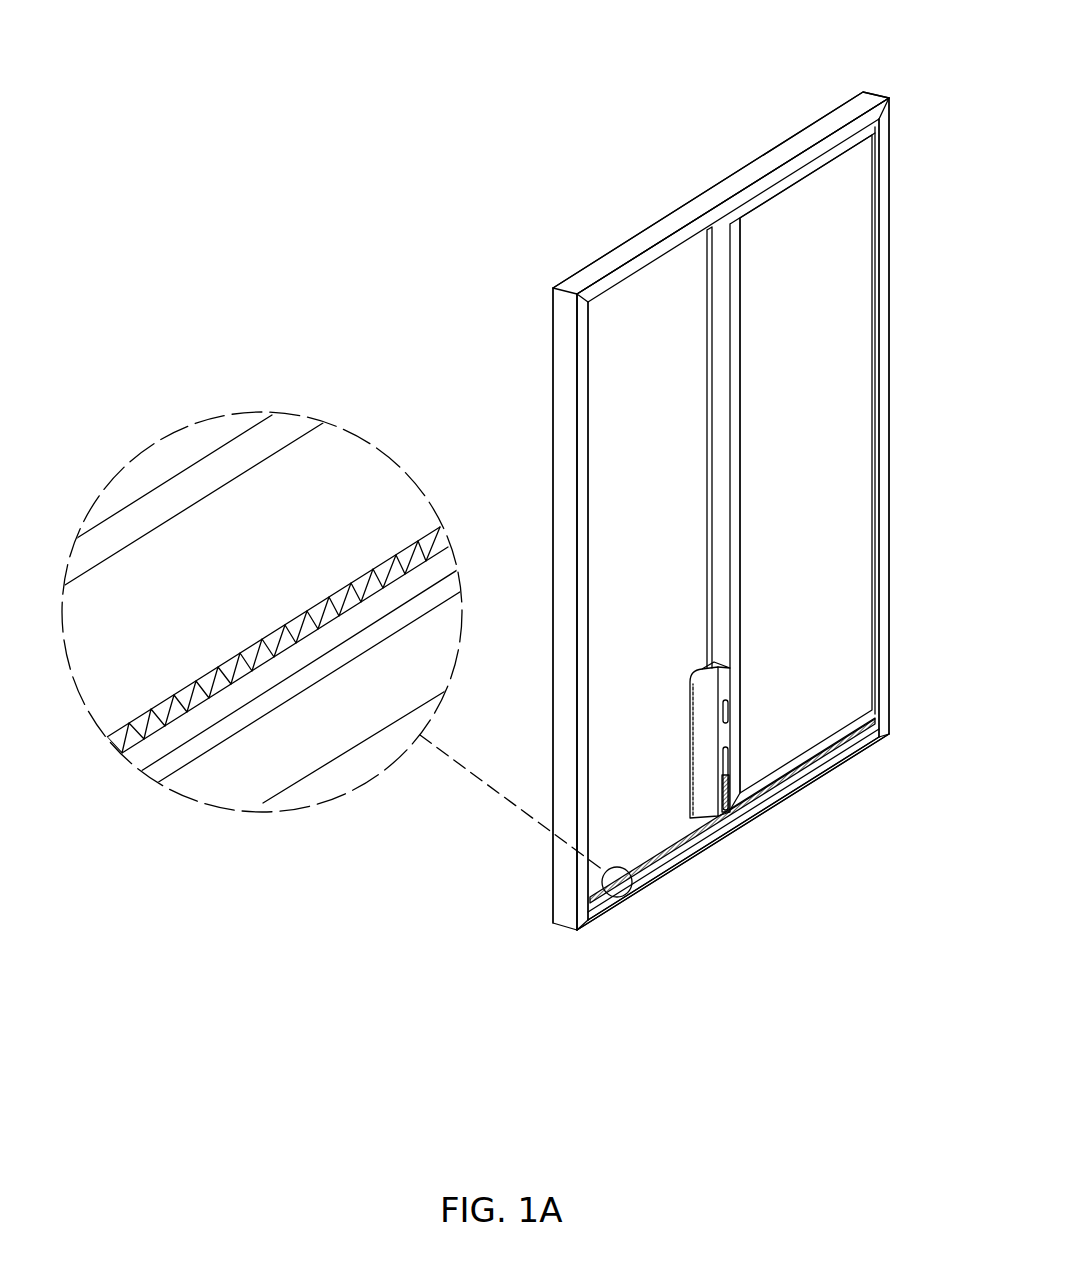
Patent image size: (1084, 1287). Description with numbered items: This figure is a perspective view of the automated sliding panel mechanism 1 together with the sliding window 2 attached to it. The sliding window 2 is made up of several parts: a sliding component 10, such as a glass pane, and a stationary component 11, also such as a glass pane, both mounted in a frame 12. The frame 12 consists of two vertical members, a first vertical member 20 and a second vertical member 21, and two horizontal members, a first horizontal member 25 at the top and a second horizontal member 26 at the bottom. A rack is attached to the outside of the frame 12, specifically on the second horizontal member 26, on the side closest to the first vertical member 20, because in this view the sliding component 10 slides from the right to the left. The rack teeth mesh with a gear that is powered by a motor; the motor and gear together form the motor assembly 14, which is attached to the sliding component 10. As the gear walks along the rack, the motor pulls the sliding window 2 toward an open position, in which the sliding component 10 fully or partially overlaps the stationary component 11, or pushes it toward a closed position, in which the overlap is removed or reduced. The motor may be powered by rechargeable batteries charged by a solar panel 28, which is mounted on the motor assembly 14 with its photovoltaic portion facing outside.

The automated sliding panel mechanism 1 is at (672, 913).
The sliding window 2 is at (813, 495).
The sliding component 10 is at (808, 685).
The stationary component 11 is at (622, 330).
The frame 12 is at (867, 103).
The motor assembly 14 is at (722, 680).
The first vertical member 20 is at (562, 668).
The second vertical member 21 is at (885, 625).
The first horizontal member 25 is at (582, 282).
The second horizontal member 26 is at (870, 735).
The solar panel 28 is at (703, 707).